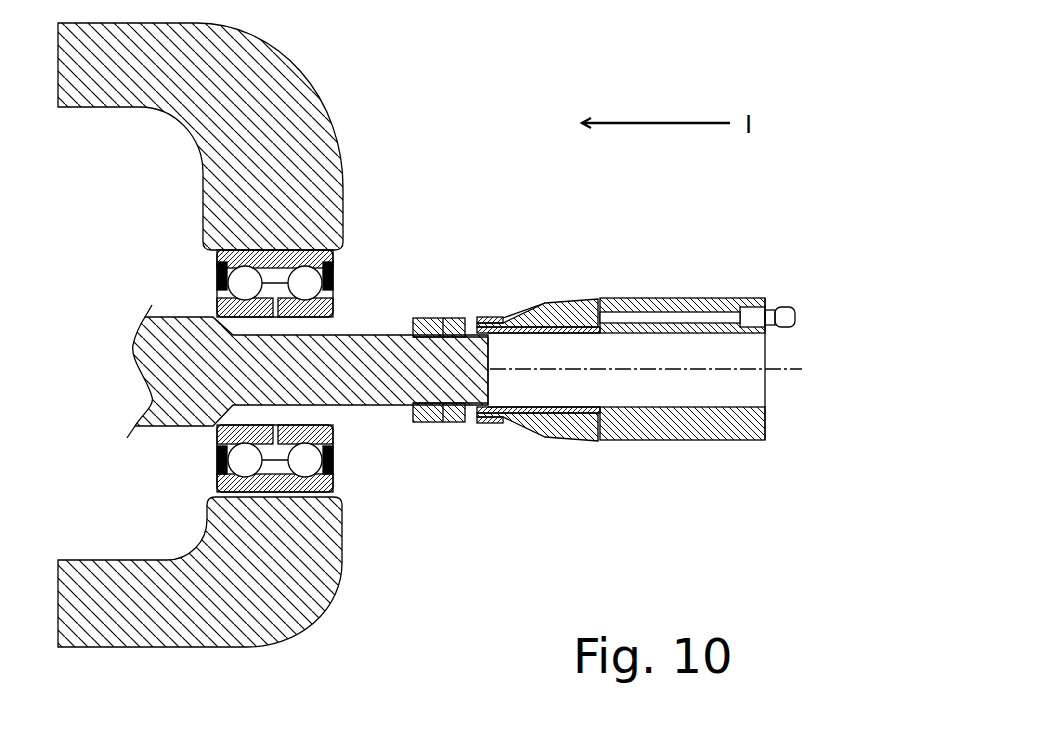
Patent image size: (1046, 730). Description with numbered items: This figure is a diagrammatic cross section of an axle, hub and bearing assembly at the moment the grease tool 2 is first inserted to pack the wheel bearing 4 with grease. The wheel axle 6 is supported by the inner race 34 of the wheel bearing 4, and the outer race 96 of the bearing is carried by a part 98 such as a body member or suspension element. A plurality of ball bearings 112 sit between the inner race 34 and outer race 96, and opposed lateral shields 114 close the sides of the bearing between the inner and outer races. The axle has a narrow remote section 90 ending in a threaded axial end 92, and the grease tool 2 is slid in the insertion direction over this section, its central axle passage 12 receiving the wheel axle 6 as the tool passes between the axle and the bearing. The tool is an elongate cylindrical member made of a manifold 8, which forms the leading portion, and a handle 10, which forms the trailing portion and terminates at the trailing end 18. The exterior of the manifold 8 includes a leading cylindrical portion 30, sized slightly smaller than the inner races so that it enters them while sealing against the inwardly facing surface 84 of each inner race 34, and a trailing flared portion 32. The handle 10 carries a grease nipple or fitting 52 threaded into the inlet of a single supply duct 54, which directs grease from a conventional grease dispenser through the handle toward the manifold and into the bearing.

The grease tool 2 is at (623, 492).
The wheel bearing 4 is at (271, 373).
The wheel axle 6 is at (167, 370).
The manifold 8 is at (537, 460).
The handle 10 is at (688, 457).
The central axle passage 12 is at (798, 388).
The trailing end 18 is at (772, 448).
The leading cylindrical portion 30 is at (470, 458).
The trailing flared portion 32 is at (550, 293).
The inner race 34 is at (215, 303).
The grease nipple or fitting 52 is at (777, 310).
The supply duct 54 is at (688, 310).
The inwardly facing surface 84 is at (310, 318).
The narrow remote section 90 is at (395, 437).
The axial end 92 is at (443, 347).
The outer race 96 is at (335, 258).
The part 98 is at (267, 87).
The ball bearings 112 is at (245, 462).
The lateral shields 114 is at (217, 273).